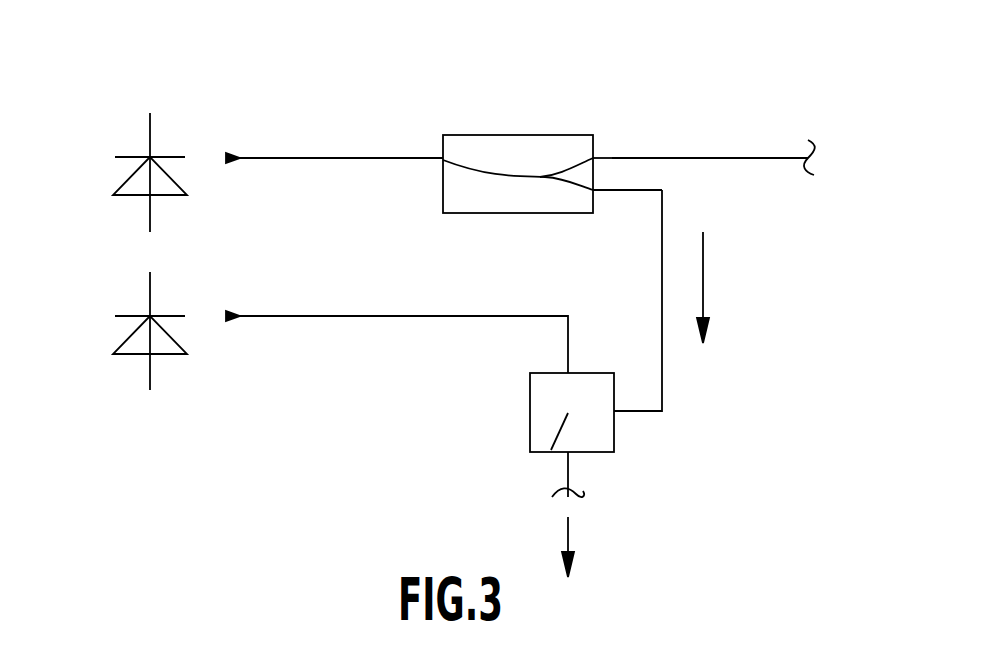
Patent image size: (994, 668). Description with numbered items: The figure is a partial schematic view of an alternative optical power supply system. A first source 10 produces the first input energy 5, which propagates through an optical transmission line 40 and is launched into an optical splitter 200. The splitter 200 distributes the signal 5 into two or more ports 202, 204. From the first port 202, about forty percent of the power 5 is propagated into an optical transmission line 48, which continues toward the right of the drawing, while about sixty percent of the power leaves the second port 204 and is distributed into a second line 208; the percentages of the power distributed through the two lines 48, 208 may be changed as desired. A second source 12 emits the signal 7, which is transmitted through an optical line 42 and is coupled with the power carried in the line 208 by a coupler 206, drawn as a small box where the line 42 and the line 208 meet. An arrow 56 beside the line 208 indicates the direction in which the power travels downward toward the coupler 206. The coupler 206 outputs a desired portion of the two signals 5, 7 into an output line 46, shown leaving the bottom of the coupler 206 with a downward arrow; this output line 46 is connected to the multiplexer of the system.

The first light source (laser diode) 10 is at (126, 135).
The second source 12 is at (126, 295).
The first input energy 5 is at (191, 157).
The signal 7 is at (191, 315).
The optical transmission line 40 is at (320, 160).
The optical line 42 is at (320, 318).
The optical splitter 200 is at (508, 118).
The port 202 is at (595, 158).
The port 204 is at (595, 191).
The second line 208 is at (663, 382).
The optical transmission line 48 is at (720, 158).
The light propagation direction 56 is at (704, 277).
The coupler 206 is at (529, 405).
The output line 46 is at (556, 485).